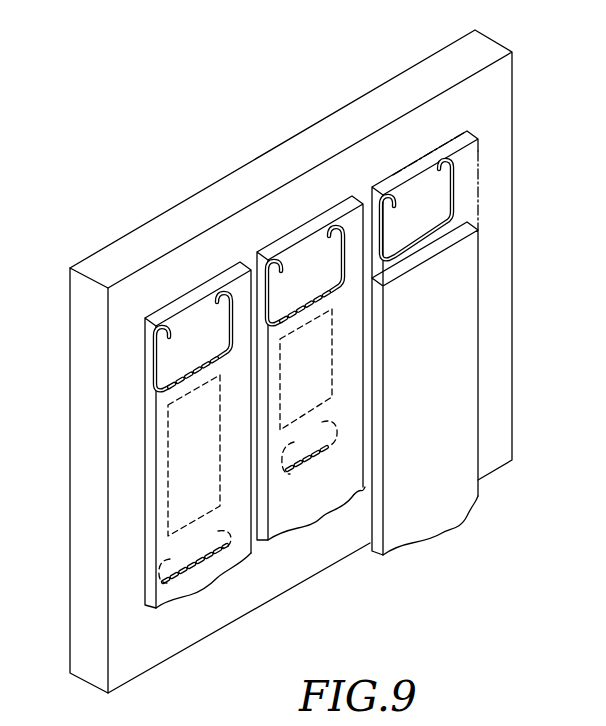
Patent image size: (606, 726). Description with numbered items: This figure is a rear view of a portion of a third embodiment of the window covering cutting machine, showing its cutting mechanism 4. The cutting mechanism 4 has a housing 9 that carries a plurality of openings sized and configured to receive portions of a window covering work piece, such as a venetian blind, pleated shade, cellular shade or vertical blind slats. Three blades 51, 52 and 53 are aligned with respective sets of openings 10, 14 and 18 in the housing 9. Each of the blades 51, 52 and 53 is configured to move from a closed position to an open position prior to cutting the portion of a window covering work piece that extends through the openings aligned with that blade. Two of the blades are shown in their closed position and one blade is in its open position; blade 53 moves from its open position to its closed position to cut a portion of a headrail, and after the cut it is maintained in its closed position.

The cutting mechanism 4 is at (303, 361).
The housing 9 is at (80, 439).
The set of openings 10 is at (290, 348).
The set of openings 14 is at (178, 412).
The set of openings 18 is at (395, 138).
The blade 51 is at (322, 505).
The blade 52 is at (217, 573).
The blade 53 is at (416, 521).